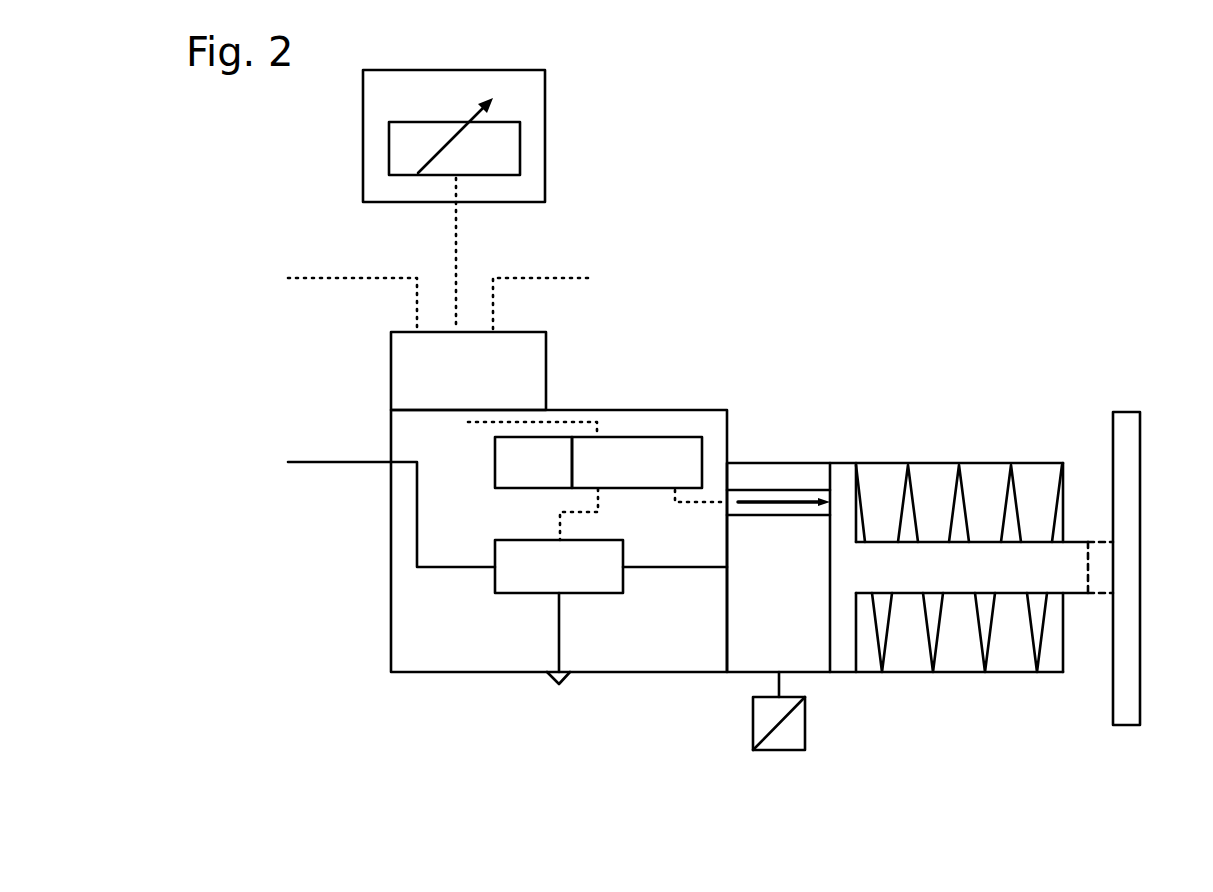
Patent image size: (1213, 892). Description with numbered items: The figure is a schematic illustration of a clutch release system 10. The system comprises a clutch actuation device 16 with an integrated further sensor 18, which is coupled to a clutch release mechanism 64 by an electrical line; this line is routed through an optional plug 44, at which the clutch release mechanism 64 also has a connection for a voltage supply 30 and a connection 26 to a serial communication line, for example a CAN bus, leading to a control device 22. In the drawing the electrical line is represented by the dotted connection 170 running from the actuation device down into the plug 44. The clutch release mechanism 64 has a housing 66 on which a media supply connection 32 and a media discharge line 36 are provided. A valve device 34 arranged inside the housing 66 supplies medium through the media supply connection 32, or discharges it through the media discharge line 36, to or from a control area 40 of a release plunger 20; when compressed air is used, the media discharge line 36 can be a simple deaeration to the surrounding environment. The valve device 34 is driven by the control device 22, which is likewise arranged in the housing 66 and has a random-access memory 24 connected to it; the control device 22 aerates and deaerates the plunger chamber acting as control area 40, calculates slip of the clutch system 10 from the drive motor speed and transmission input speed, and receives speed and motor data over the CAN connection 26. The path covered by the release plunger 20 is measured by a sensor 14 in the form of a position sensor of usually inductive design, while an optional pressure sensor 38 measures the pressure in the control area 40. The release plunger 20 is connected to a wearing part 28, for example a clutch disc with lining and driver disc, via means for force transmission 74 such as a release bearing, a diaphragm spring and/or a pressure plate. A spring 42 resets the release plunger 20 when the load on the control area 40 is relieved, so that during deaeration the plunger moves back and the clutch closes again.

The clutch release system 10 is at (302, 628).
The sensor 14 is at (778, 518).
The clutch actuation device 16 is at (548, 86).
The further sensor 18 is at (520, 152).
The release plunger 20 is at (966, 589).
The control device 22 is at (652, 484).
The random-access memory 24 is at (556, 484).
The connection 26 is at (570, 295).
The wearing part 28 is at (1126, 405).
The voltage supply 30 is at (323, 295).
The media supply connection 32 is at (367, 507).
The valve device 34 is at (575, 589).
The media discharge line 36 is at (552, 684).
The pressure sensor 38 is at (753, 720).
The control area 40 is at (794, 640).
The spring 42 is at (967, 487).
The plug 44 is at (546, 386).
The clutch release mechanism 64 is at (638, 701).
The housing 66 is at (672, 406).
The means for force transmission 74 is at (1108, 596).
The signal line 170 is at (449, 224).